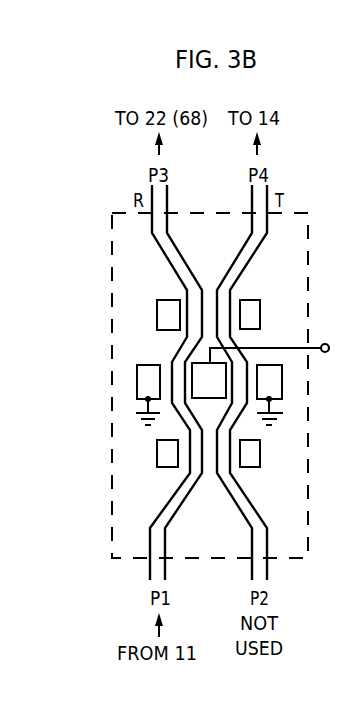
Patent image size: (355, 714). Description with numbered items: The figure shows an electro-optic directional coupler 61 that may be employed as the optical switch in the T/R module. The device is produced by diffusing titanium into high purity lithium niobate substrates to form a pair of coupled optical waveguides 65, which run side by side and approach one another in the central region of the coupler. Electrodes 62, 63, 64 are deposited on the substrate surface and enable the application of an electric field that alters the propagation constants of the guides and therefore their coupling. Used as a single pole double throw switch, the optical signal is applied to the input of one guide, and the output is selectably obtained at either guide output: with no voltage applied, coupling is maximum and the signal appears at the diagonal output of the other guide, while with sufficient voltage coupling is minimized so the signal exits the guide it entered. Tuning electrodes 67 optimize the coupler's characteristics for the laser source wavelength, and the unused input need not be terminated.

The electro-optic directional coupler 61 is at (110, 277).
The electrode 62 is at (136, 382).
The electrode 63 is at (219, 390).
The electrode 64 is at (283, 388).
The coupled optical waveguides 65 is at (230, 505).
The tuning electrode 67 is at (152, 455).